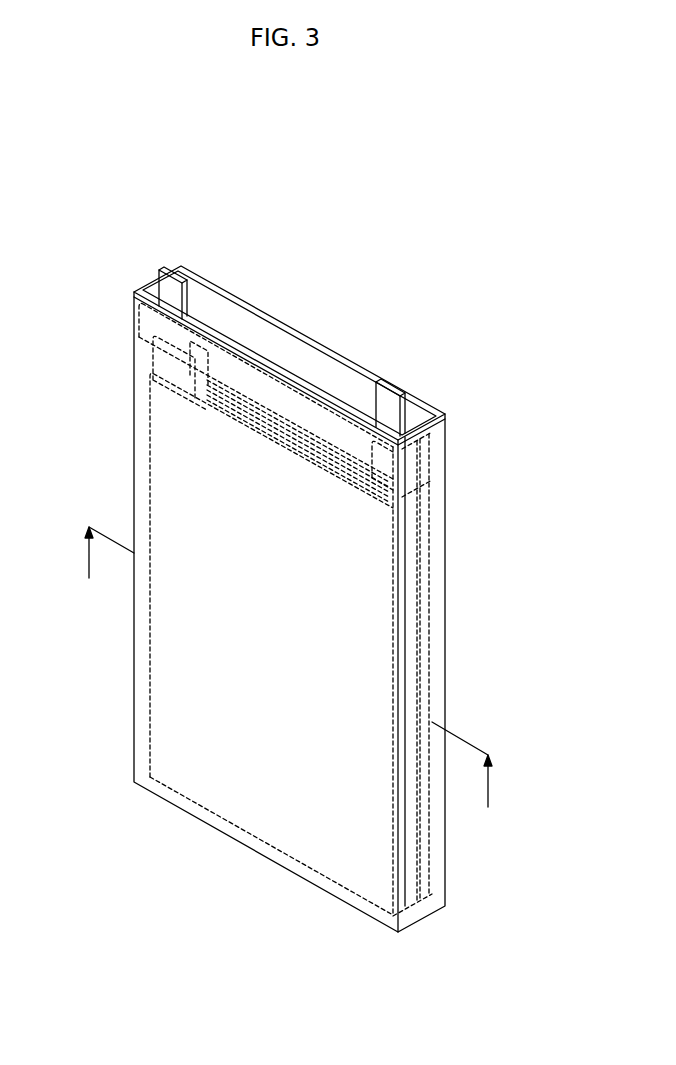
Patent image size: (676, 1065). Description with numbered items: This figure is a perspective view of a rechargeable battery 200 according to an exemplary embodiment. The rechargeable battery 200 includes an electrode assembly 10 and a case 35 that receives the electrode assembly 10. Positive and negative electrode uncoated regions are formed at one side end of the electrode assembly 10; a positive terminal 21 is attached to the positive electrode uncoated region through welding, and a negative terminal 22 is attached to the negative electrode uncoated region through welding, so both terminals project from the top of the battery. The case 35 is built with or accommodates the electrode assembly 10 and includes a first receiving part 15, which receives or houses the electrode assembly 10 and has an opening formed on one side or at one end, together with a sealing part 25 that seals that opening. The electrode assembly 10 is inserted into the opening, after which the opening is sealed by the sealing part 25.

The rechargeable battery 200 is at (327, 200).
The electrode assembly 10 is at (162, 699).
The first receiving part 15 is at (446, 622).
The positive terminal 21 is at (160, 270).
The negative terminal 22 is at (389, 383).
The sealing part 25 is at (385, 452).
The case 35 is at (502, 505).